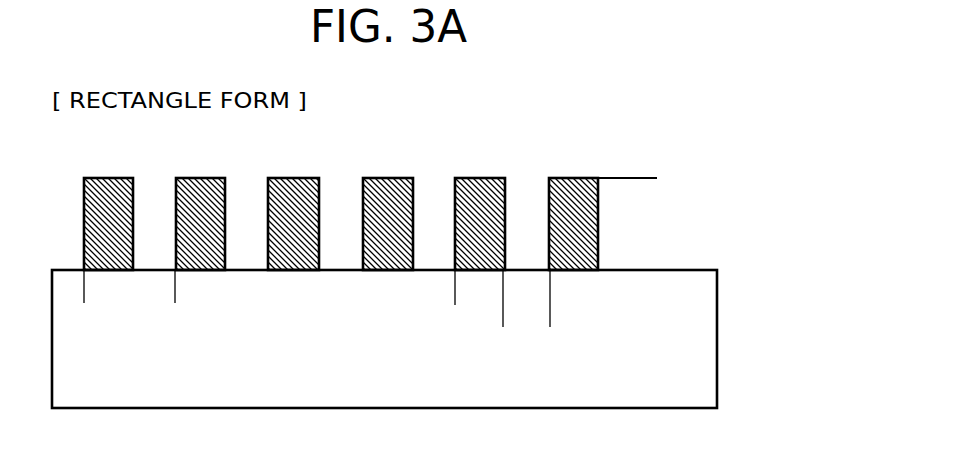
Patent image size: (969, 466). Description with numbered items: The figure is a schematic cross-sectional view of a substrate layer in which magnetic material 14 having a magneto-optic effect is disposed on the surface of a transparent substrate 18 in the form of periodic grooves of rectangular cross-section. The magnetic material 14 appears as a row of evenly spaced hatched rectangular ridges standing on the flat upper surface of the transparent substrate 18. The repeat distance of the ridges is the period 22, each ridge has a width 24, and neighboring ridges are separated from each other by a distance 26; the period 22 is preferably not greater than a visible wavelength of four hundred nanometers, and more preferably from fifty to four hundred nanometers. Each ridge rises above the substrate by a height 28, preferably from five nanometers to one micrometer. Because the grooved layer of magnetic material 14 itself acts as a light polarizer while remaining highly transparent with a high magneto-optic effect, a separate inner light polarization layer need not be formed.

The magnetic material 14 is at (398, 180).
The transparent substrate 18 is at (384, 339).
The period 22 is at (175, 297).
The width 24 is at (510, 296).
The distance 26 is at (473, 318).
The height 28 is at (650, 178).